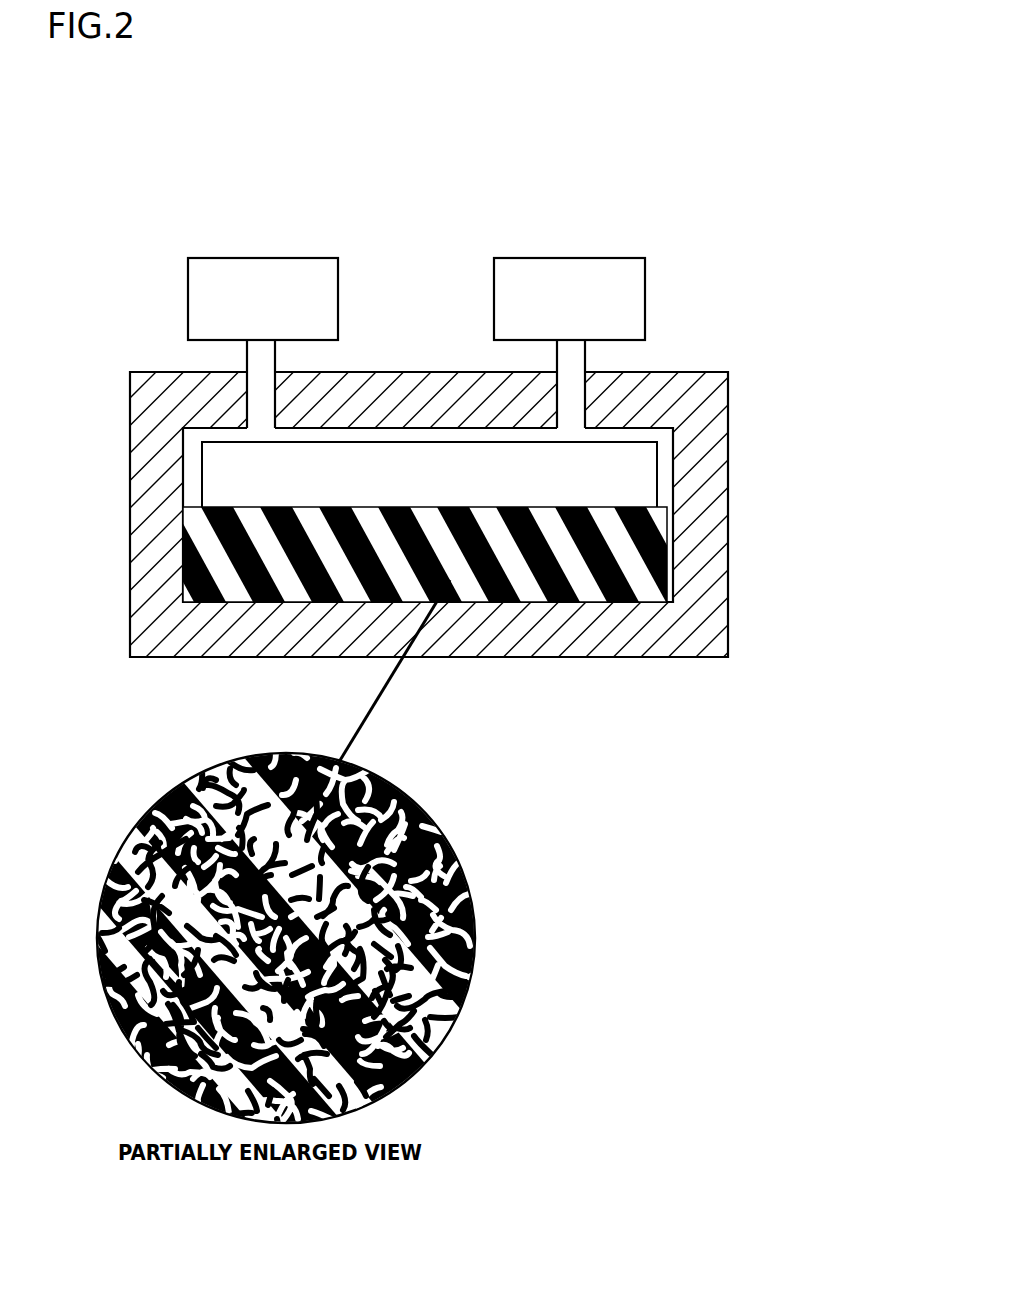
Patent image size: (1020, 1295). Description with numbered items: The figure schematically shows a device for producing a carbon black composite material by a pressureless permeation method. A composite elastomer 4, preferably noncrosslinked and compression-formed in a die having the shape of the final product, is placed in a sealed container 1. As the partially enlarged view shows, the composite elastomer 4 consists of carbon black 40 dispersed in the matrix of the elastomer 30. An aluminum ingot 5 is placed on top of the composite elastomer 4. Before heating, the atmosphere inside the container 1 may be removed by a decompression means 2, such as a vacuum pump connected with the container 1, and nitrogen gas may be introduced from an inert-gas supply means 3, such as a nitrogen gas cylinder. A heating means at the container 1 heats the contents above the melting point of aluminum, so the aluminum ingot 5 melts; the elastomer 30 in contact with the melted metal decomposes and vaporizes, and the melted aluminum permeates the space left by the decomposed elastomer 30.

The sealed container 1 is at (655, 387).
The decompression means 2 is at (250, 260).
The inert-gas supply means 3 is at (588, 268).
The composite elastomer 4 is at (567, 543).
The aluminum ingot 5 is at (587, 475).
The elastomer 30 is at (357, 967).
The carbon black 40 is at (470, 922).